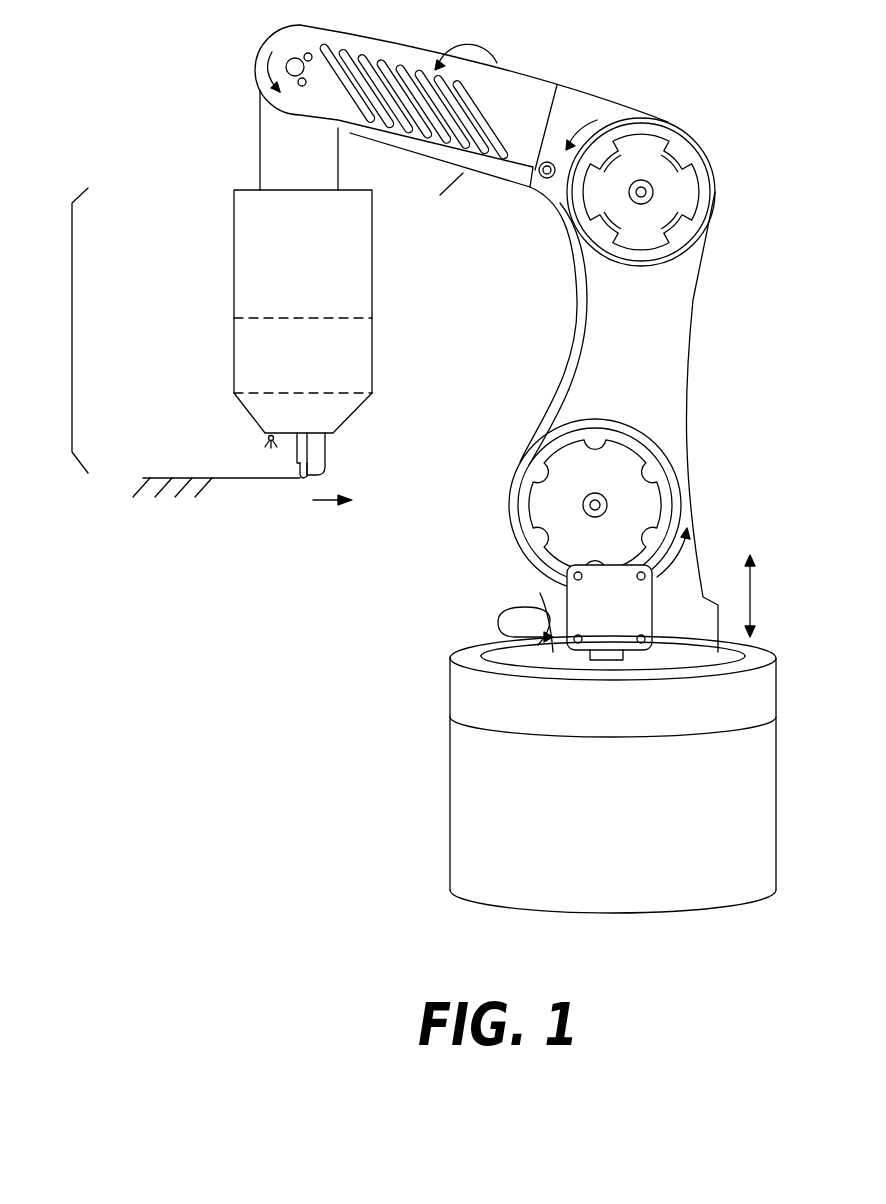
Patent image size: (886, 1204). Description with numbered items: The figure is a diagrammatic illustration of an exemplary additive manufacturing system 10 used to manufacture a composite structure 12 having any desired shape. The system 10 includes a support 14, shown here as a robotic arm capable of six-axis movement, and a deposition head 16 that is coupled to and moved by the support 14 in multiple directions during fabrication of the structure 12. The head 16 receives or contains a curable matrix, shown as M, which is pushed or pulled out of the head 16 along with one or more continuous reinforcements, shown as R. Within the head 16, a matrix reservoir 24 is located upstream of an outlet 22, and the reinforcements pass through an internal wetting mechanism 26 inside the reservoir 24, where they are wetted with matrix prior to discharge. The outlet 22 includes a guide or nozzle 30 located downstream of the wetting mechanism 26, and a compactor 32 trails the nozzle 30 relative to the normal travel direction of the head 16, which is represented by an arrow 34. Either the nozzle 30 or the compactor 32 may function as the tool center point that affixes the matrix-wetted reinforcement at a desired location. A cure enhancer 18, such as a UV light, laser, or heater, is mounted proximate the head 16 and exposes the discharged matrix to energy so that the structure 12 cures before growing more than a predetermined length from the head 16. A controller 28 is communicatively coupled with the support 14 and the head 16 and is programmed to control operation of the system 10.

The system 10 is at (280, 680).
The composite structure 12 is at (143, 478).
The support 14 is at (616, 382).
The deposition head 16 is at (72, 333).
The cure enhancer 18 is at (266, 441).
The outlet 22 is at (378, 432).
The matrix reservoir 24 is at (234, 302).
The internal wetting mechanism 26 is at (289, 369).
The controller 28 is at (598, 612).
The nozzle 30 is at (325, 456).
The compactor 32 is at (302, 480).
The arrow 34 is at (321, 503).